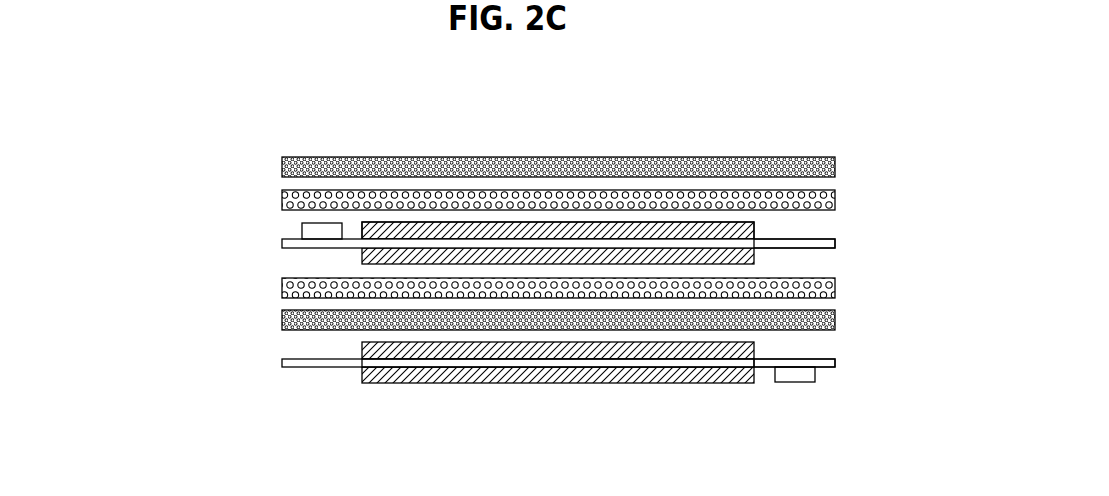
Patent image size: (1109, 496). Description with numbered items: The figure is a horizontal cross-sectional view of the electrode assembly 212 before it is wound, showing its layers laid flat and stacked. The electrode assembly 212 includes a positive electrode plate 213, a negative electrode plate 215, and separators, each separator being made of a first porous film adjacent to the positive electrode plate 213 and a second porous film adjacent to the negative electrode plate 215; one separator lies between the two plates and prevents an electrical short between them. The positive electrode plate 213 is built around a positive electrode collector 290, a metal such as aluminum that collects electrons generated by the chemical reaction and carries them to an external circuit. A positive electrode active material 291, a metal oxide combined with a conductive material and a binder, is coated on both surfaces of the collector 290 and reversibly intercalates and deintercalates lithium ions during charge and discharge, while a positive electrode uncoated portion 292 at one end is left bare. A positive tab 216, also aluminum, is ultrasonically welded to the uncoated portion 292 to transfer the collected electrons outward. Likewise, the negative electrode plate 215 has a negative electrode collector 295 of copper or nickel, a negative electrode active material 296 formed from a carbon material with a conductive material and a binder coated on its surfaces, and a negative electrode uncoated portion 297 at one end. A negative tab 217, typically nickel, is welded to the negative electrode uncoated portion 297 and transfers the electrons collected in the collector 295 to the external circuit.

The electrode assembly 212 is at (797, 118).
The positive electrode plate 213 is at (278, 241).
The negative electrode plate 215 is at (278, 361).
The positive tab 216 is at (327, 231).
The negative tab 217 is at (799, 382).
The positive electrode collector 290 is at (459, 240).
The positive electrode active material 291 is at (623, 230).
The positive electrode uncoated portion 292 is at (815, 242).
The negative electrode collector 295 is at (527, 367).
The negative electrode active material 296 is at (618, 375).
The negative electrode uncoated portion 297 is at (817, 362).